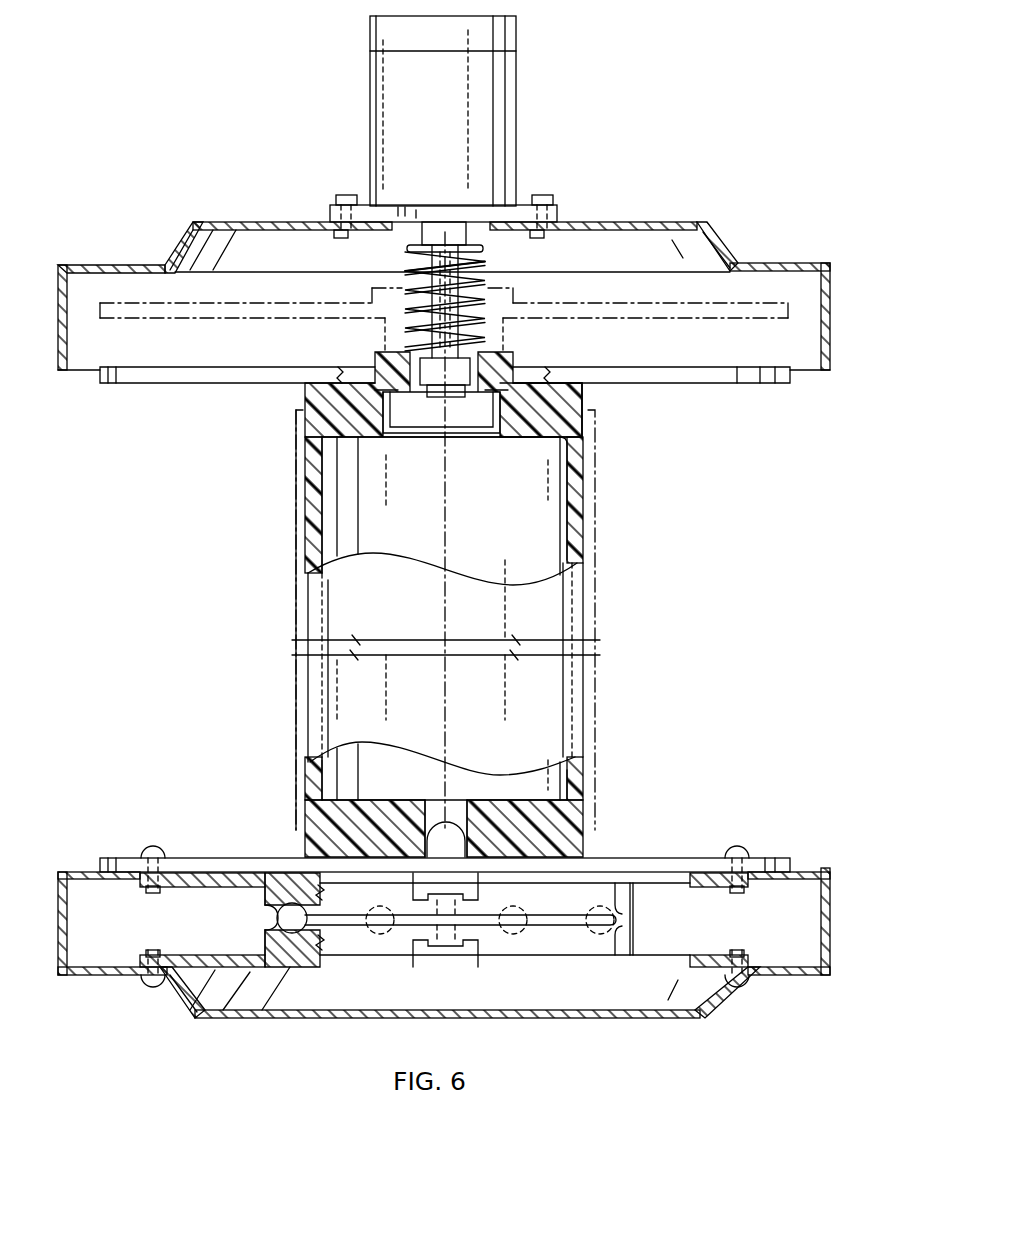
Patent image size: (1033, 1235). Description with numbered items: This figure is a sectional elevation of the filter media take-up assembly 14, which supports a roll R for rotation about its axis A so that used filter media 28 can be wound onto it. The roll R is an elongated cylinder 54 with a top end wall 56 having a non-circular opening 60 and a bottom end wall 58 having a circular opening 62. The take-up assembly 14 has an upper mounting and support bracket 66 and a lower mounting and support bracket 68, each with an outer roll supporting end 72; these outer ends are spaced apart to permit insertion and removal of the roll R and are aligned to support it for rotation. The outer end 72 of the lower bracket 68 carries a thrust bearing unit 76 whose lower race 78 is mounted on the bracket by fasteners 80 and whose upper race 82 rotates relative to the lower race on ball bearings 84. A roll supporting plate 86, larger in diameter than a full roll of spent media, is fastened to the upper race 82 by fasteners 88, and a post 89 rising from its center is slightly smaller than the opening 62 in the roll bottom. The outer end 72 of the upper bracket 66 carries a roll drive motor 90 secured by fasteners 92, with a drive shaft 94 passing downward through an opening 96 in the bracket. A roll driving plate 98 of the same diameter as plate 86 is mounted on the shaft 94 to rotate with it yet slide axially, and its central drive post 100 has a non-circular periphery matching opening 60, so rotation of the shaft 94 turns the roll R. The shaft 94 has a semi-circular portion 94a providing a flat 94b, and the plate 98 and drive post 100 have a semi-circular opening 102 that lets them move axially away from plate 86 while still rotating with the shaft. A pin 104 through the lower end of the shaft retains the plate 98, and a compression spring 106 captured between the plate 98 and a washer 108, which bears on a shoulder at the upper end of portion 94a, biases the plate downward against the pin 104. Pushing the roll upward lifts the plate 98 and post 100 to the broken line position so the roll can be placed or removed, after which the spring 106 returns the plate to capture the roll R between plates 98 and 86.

The take-up assembly 14 is at (444, 537).
The filter media 28 is at (598, 738).
The elongated cylinder 54 is at (580, 500).
The top end wall 56 is at (330, 392).
The bottom end wall 58 is at (540, 852).
The non-circular opening 60 is at (505, 412).
The circular opening 62 is at (455, 815).
The upper mounting and support bracket 66 is at (710, 200).
The lower mounting and support bracket 68 is at (735, 1016).
The outer roll supporting end 72 is at (130, 265).
The thrust bearing unit 76 is at (652, 918).
The lower race 78 is at (282, 962).
The fasteners 80 is at (153, 988).
The upper race 82 is at (282, 882).
The ball bearings 84 is at (294, 932).
The roll supporting plate 86 is at (130, 858).
The fasteners 88 is at (156, 850).
The post 89 is at (443, 832).
The roll drive motor 90 is at (510, 68).
The fasteners 92 is at (548, 195).
The drive shaft 94 is at (428, 218).
The semi-circular portion 94a is at (433, 270).
The flat 94b is at (462, 400).
The opening 96 is at (492, 222).
The roll driving plate 98 is at (150, 384).
The drive post 100 is at (388, 405).
The semi-circular opening 102 is at (462, 367).
The pin 104 is at (432, 400).
The compression spring 106 is at (403, 270).
The washer 108 is at (484, 249).
The roll R is at (598, 424).
The axis A is at (448, 532).